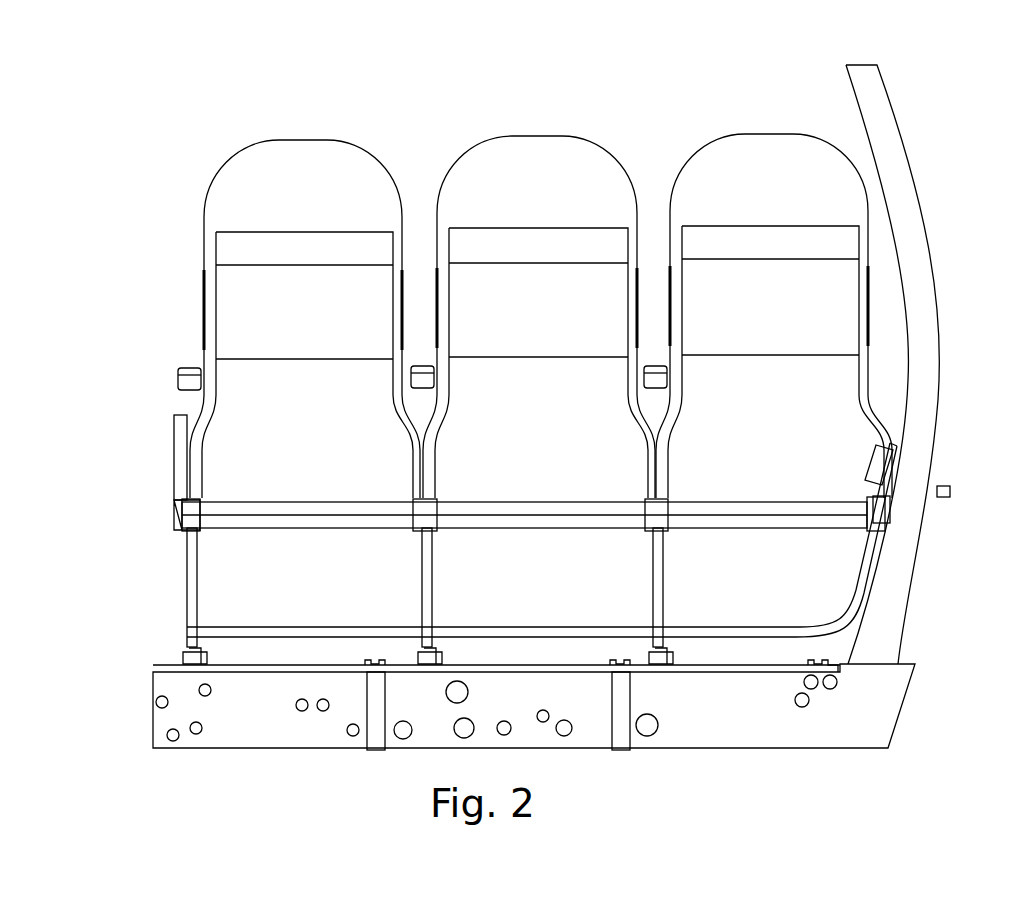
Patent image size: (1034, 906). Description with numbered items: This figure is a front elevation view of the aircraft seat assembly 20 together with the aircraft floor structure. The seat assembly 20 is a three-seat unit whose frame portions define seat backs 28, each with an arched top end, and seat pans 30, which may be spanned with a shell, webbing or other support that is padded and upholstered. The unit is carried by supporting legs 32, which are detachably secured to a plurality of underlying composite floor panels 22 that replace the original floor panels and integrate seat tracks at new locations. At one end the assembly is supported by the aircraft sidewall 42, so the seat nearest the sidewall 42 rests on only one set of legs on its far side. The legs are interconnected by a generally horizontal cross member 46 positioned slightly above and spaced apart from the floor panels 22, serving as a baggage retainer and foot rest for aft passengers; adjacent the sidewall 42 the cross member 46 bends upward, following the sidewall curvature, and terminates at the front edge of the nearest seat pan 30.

The seat assembly 20 is at (172, 116).
The composite floor panels 22 is at (165, 662).
The seat back 28 is at (320, 155).
The seat pan 30 is at (298, 506).
The supporting legs 32 is at (193, 560).
The aircraft sidewall 42 is at (924, 287).
The cross member 46 is at (332, 625).